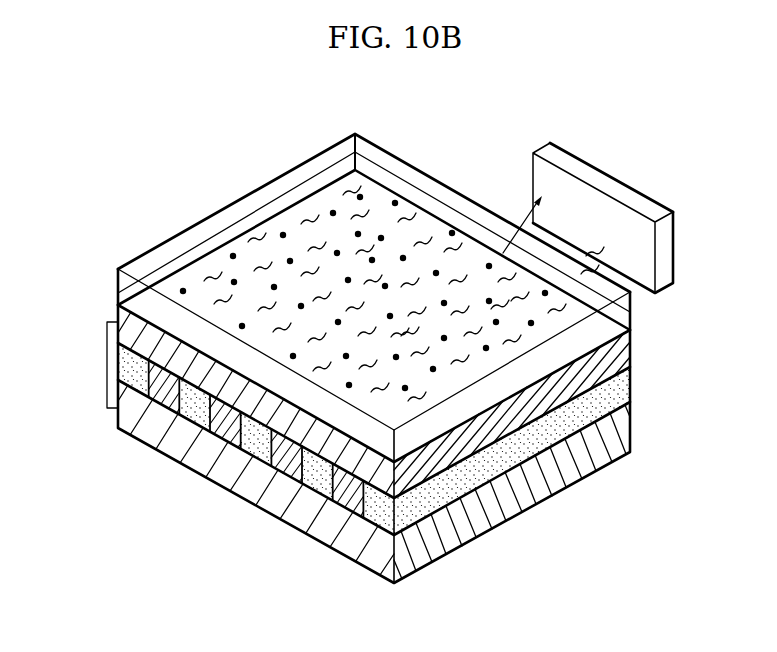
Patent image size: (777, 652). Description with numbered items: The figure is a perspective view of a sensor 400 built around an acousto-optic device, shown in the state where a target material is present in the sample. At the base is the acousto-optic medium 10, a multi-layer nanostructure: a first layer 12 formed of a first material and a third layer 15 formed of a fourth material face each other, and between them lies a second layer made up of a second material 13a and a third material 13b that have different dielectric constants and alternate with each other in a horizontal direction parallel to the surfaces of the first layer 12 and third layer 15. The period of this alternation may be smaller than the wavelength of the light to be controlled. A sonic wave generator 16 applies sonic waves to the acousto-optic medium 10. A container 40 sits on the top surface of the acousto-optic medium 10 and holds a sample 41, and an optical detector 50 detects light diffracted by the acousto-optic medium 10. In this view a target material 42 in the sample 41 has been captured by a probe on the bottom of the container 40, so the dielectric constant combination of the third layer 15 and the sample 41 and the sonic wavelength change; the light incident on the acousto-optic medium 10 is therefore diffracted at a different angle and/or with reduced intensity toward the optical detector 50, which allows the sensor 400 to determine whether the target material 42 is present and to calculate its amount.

The acousto-optic medium 10 is at (216, 508).
The first layer 12 is at (172, 443).
The second material 13a is at (382, 516).
The third material 13b is at (348, 499).
The third layer 15 is at (118, 322).
The sonic wave generator 16 is at (335, 468).
The container 40 is at (339, 282).
The sample 41 is at (397, 183).
The target material 42 is at (453, 232).
The optical detector 50 is at (648, 206).
The sensor 400 is at (358, 358).